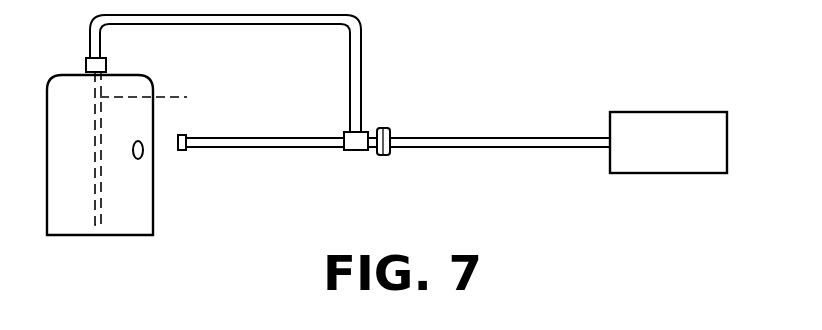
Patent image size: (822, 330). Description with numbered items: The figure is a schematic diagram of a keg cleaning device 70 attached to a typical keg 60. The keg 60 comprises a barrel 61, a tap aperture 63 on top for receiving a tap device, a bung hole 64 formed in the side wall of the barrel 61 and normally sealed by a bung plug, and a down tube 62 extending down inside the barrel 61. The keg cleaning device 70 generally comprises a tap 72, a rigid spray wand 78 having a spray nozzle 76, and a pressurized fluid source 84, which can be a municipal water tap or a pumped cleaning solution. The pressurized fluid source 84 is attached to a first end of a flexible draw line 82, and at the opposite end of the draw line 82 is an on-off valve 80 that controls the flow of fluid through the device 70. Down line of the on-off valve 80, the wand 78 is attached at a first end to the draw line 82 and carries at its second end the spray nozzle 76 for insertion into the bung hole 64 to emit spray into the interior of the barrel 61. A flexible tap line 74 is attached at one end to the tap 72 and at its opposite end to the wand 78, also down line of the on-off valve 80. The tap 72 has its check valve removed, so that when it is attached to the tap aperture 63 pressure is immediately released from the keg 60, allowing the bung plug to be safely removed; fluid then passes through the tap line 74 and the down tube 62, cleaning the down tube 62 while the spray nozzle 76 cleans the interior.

The keg 60 is at (107, 243).
The barrel 61 is at (132, 190).
The down tube 62 is at (158, 96).
The tap aperture 63 is at (87, 73).
The bung hole 64 is at (143, 153).
The keg cleaning device 70 is at (440, 56).
The tap 72 is at (102, 67).
The flexible tap line 74 is at (283, 20).
The spray nozzle 76 is at (184, 135).
The rigid spray wand 78 is at (331, 148).
The on-off valve 80 is at (386, 129).
The flexible draw line 82 is at (500, 148).
The pressurized fluid source 84 is at (690, 155).